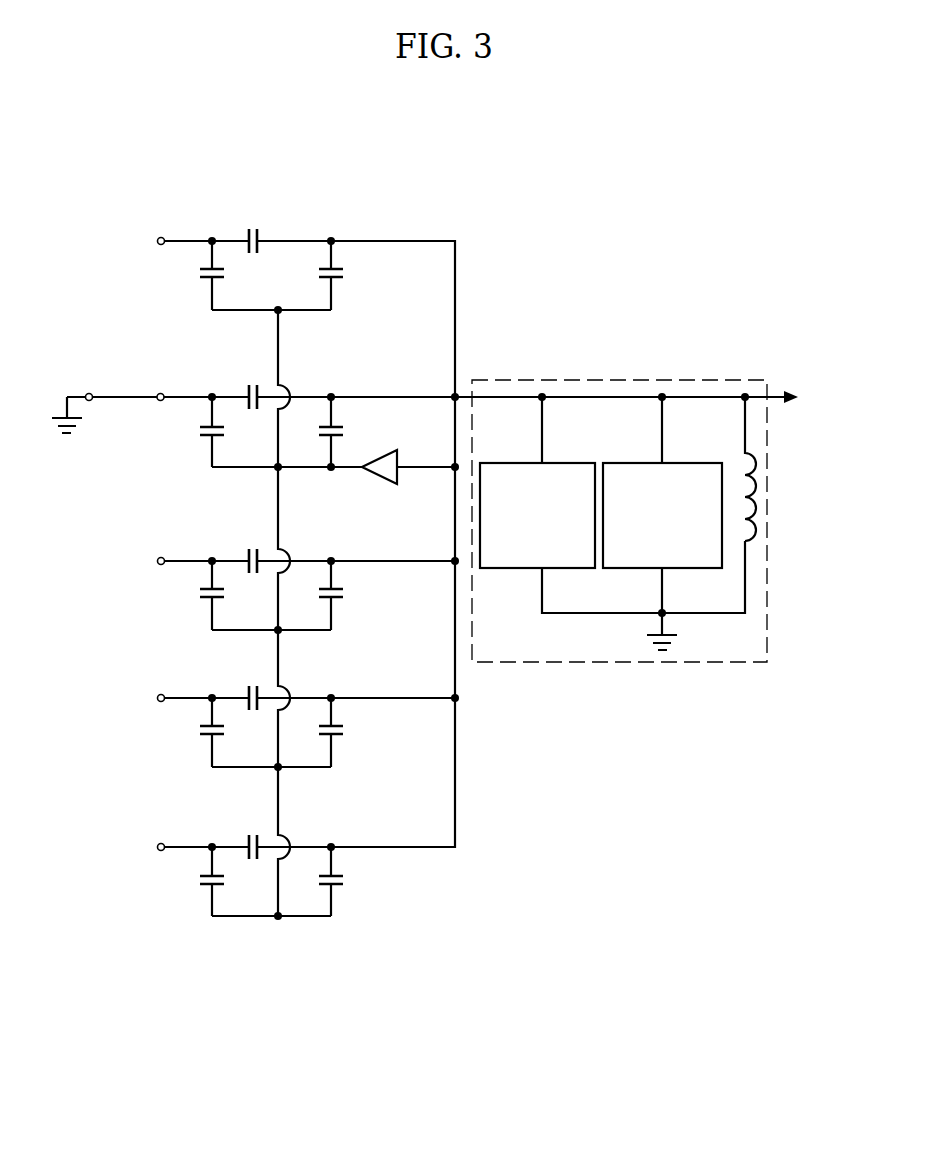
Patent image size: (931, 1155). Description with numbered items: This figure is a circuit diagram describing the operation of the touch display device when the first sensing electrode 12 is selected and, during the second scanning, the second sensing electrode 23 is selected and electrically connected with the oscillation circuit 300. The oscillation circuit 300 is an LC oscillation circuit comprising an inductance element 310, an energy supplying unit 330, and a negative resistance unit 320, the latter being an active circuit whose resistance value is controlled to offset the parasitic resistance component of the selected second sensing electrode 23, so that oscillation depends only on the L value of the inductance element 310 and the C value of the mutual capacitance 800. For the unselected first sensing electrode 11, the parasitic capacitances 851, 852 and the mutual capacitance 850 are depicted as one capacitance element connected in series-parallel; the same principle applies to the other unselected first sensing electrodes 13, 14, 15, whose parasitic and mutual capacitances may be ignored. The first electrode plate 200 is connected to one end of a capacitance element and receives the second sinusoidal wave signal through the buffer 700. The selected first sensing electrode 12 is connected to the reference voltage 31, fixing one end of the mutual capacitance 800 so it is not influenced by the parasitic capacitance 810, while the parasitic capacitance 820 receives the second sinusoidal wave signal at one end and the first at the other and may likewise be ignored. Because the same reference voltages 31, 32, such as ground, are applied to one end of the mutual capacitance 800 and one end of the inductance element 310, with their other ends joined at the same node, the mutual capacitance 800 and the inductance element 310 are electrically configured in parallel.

The first sensing electrode 11 is at (183, 240).
The first sensing electrode 12 is at (183, 396).
The first sensing electrode 13 is at (183, 560).
The first sensing electrode 14 is at (183, 697).
The first sensing electrode 15 is at (183, 846).
The second sensing electrode 23 is at (457, 305).
The reference voltage 31 is at (78, 428).
The reference voltage 32 is at (672, 645).
The first electrode plate 200 is at (303, 470).
The oscillation circuit 300 is at (692, 379).
The inductance element 310 is at (757, 503).
The negative resistance unit 320 is at (706, 462).
The energy supplying unit 330 is at (573, 462).
The buffer 700 is at (388, 484).
The mutual capacitance 800 is at (243, 385).
The parasitic capacitance 810 is at (199, 436).
The parasitic capacitance 820 is at (343, 428).
The mutual capacitance 850 is at (243, 228).
The parasitic capacitance 851 is at (199, 280).
The parasitic capacitance 852 is at (343, 271).